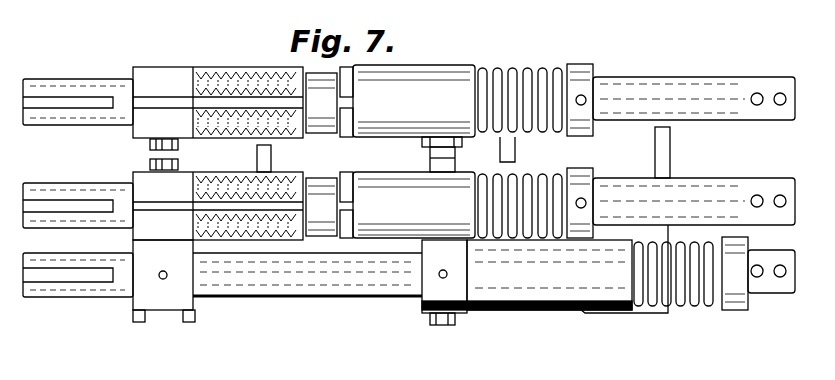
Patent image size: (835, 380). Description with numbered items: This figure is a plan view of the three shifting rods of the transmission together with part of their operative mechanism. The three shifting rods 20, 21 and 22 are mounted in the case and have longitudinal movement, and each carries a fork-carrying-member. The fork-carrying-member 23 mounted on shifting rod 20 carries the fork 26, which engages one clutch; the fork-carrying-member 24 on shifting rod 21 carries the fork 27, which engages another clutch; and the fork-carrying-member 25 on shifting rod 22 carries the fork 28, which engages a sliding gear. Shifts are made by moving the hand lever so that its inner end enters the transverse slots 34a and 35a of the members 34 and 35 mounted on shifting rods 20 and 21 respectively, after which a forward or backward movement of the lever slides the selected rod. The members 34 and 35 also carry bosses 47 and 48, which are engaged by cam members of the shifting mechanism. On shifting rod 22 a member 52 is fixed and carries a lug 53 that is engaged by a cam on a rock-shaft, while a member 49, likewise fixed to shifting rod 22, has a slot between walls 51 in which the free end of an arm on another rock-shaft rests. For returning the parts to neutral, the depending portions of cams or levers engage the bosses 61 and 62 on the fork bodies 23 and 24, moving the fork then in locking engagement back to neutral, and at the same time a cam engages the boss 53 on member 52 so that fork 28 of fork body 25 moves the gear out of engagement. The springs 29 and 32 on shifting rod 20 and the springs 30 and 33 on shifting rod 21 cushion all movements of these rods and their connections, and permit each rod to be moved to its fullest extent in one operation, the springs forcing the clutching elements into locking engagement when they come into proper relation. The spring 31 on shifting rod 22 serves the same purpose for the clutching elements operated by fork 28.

The shifting rod 20 is at (672, 84).
The shifting rod 21 is at (641, 183).
The shifting rod 22 is at (377, 283).
The fork-carrying-member 23 is at (414, 101).
The fork-carrying-member 24 is at (414, 205).
The fork-carrying-member 25 is at (527, 275).
The fork 26 is at (505, 68).
The fork 27 is at (262, 147).
The fork 28 is at (655, 143).
The spring 29 is at (552, 72).
The spring 30 is at (541, 175).
The spring 31 is at (687, 303).
The spring 32 is at (219, 72).
The spring 33 is at (223, 182).
The member 34 is at (218, 102).
The transverse slot 34a is at (322, 103).
The member 35 is at (218, 206).
The transverse slot 35a is at (323, 186).
The boss 47 is at (150, 146).
The boss 48 is at (150, 165).
The member 49 is at (163, 275).
The walls 51 is at (133, 317).
The member 52 is at (433, 292).
The lug 53 is at (456, 320).
The boss 61 is at (422, 145).
The boss 62 is at (430, 160).